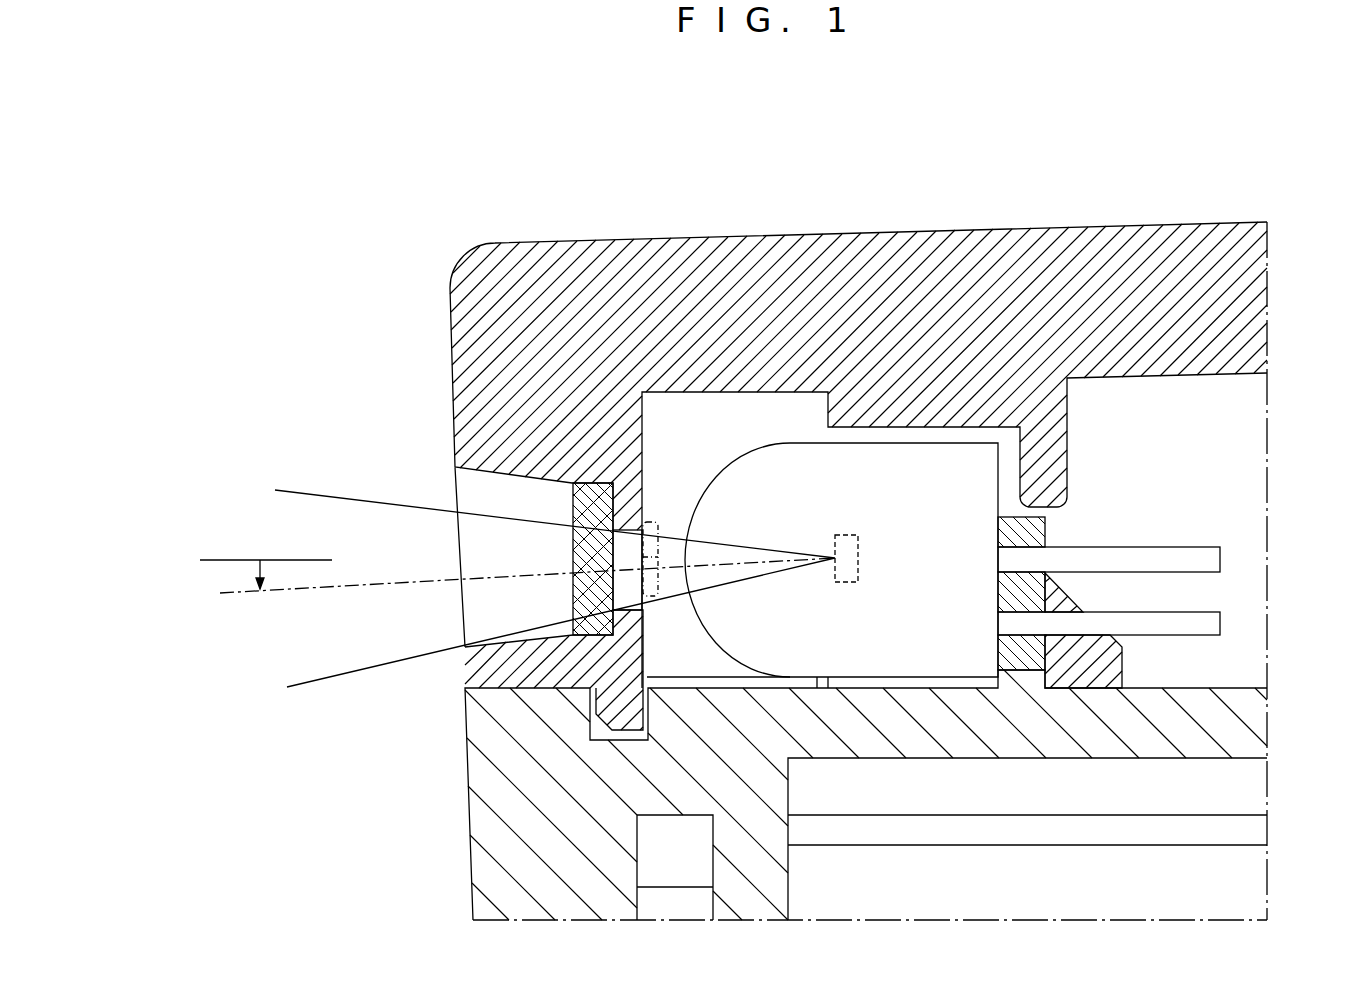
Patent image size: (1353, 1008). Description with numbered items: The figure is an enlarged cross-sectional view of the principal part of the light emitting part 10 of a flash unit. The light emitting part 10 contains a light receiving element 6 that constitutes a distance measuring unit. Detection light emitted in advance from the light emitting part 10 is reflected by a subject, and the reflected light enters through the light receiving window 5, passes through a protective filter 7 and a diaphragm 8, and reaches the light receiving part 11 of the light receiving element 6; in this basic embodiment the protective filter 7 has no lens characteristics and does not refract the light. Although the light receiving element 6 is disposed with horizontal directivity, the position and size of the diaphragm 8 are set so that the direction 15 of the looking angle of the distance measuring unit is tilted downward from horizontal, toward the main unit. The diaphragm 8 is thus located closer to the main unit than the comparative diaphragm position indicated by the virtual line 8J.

The light receiving window 5 is at (505, 478).
The light receiving element 6 is at (907, 457).
The protective filter 7 is at (602, 655).
The diaphragm 8 is at (625, 584).
The virtual line 8J is at (655, 538).
The light emitting part 10 is at (1128, 221).
The light receiving part 11 is at (858, 576).
The direction of the looking angle 15 is at (290, 588).